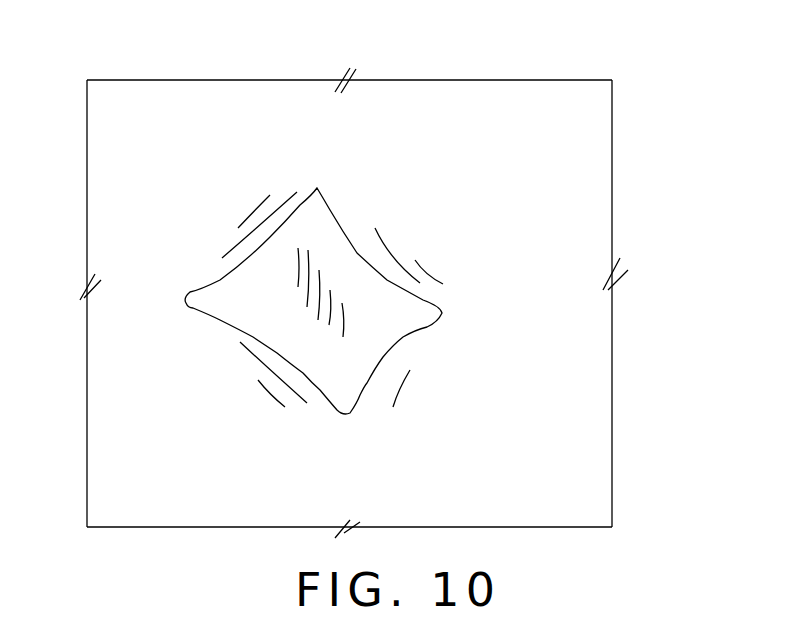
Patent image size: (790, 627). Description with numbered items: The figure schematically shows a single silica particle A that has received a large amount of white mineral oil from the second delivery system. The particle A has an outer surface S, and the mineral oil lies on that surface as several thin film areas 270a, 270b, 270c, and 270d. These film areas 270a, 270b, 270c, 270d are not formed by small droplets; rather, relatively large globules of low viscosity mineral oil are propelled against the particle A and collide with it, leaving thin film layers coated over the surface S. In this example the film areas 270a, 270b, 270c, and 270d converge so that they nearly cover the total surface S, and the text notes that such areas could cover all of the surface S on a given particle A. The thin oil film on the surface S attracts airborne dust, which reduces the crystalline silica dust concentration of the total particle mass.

The film area 270a is at (195, 495).
The film area 270b is at (187, 105).
The film area 270c is at (505, 98).
The film area 270d is at (585, 460).
The outer surface S is at (338, 262).
The particle A is at (246, 304).